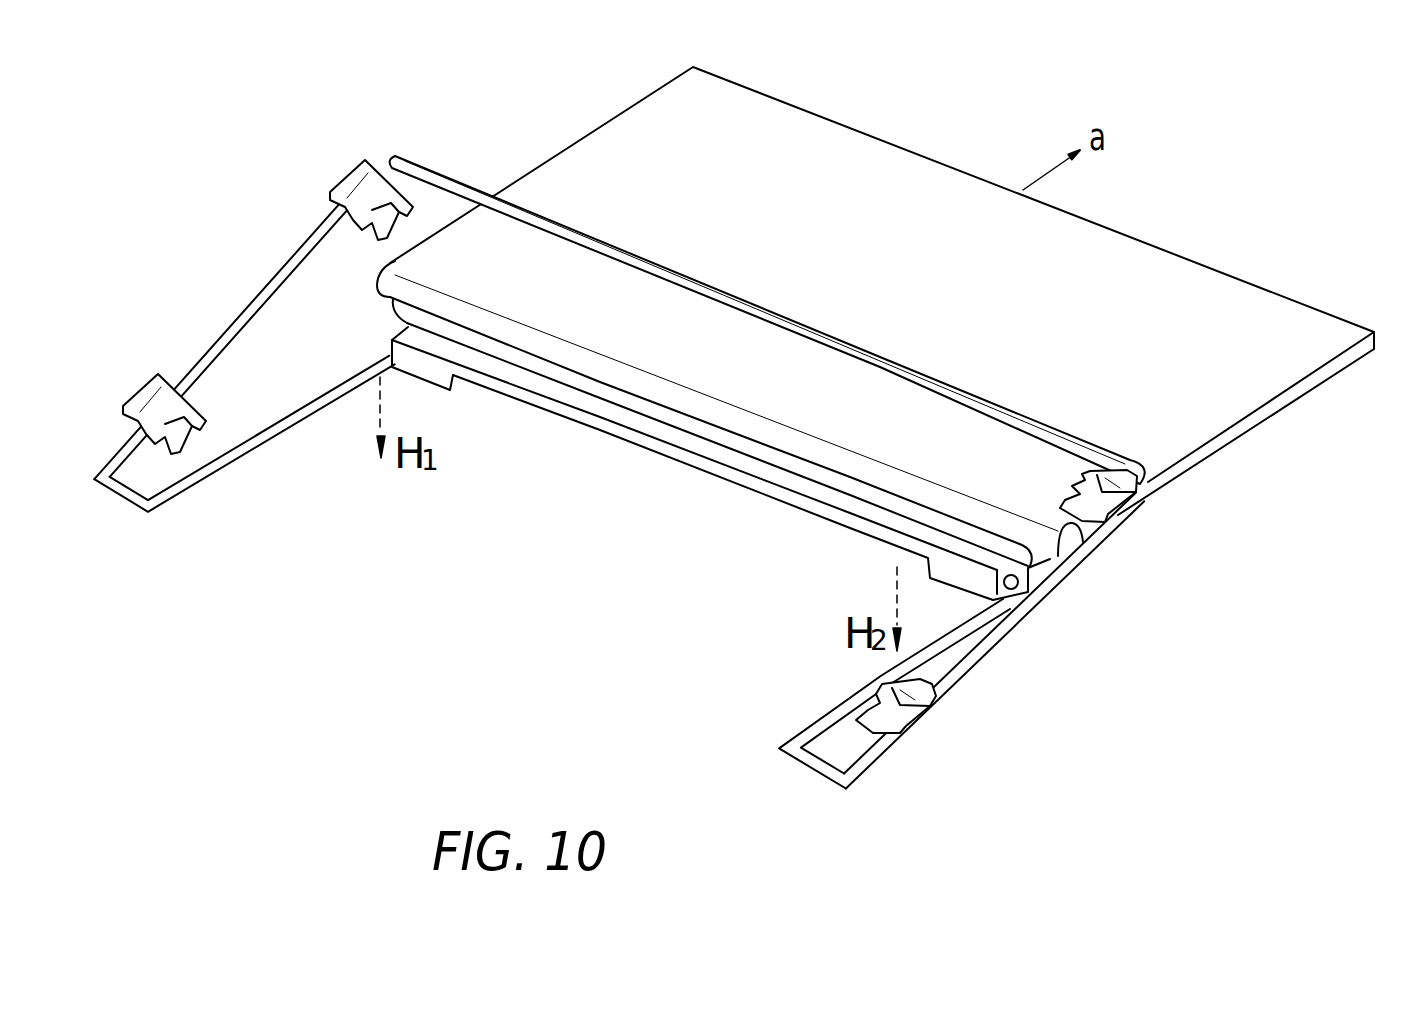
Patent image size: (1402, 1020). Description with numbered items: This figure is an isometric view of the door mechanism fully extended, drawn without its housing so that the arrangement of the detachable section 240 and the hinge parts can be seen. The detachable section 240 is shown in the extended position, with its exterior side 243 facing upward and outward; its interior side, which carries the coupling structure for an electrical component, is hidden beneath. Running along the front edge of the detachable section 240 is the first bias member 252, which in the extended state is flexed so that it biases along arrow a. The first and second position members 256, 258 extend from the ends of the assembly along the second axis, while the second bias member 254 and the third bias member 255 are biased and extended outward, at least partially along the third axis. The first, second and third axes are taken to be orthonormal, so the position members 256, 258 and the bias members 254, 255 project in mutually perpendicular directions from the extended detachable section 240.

The detachable section 240 is at (787, 168).
The exterior side 243 is at (695, 183).
The first bias member 252 is at (713, 288).
The second bias member 254 is at (252, 445).
The third bias member 255 is at (828, 712).
The first position member 256 is at (242, 314).
The second position member 258 is at (997, 635).